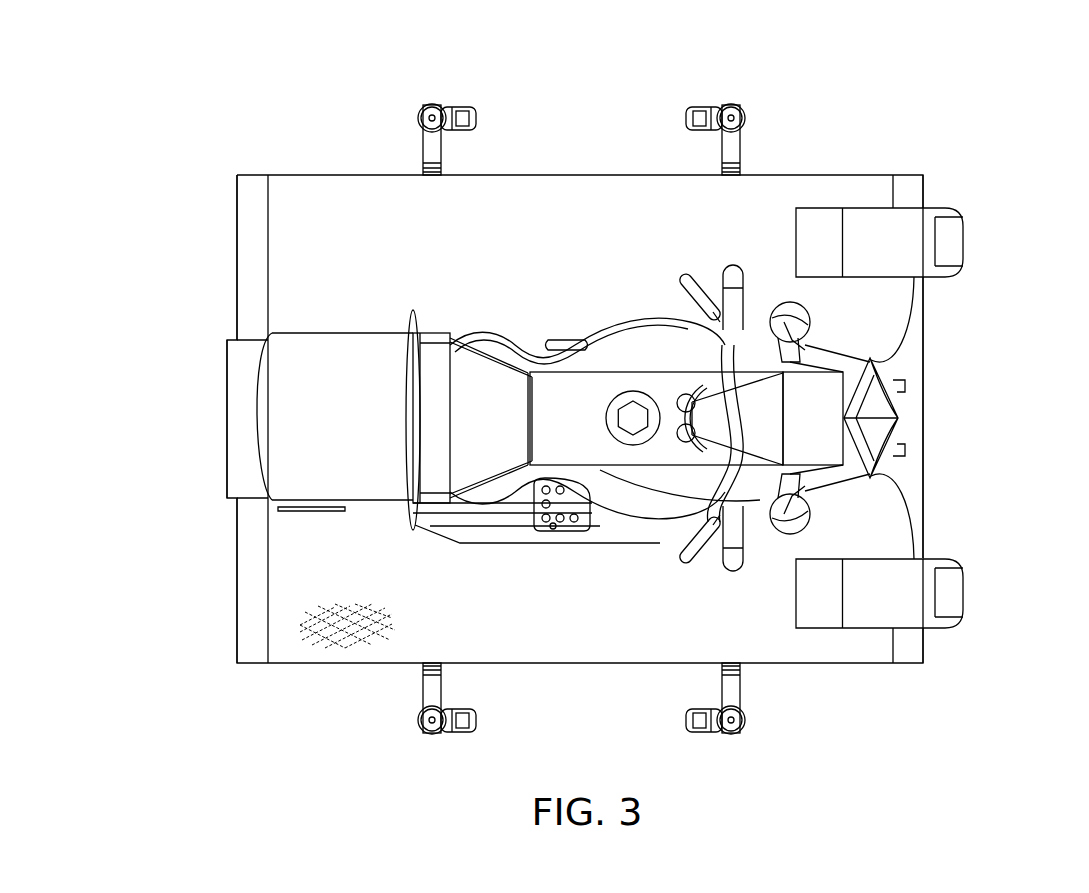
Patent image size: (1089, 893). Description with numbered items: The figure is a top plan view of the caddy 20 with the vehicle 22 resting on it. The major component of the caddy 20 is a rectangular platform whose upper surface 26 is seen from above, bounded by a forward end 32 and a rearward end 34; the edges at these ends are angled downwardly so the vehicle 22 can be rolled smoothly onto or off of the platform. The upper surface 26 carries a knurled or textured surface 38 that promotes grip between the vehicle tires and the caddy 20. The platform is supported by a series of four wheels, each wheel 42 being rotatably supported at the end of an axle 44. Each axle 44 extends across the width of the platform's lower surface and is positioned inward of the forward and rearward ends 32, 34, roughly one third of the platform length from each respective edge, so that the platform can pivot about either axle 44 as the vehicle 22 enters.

The caddy 20 is at (577, 428).
The vehicle 22 is at (547, 416).
The upper surface 26 is at (585, 602).
The forward end 32 is at (893, 418).
The rearward end 34 is at (248, 587).
The knurled or textured surface 38 is at (337, 630).
The wheel 42 is at (460, 107).
The axle 44 is at (433, 150).